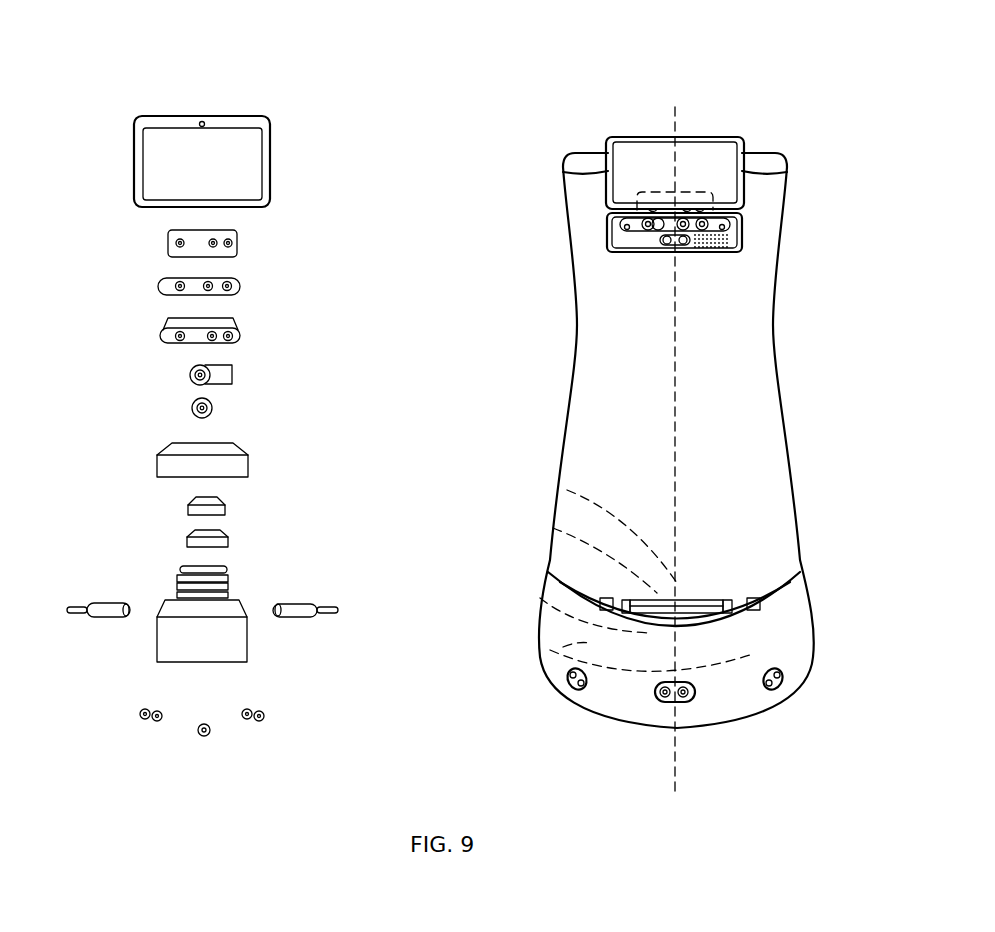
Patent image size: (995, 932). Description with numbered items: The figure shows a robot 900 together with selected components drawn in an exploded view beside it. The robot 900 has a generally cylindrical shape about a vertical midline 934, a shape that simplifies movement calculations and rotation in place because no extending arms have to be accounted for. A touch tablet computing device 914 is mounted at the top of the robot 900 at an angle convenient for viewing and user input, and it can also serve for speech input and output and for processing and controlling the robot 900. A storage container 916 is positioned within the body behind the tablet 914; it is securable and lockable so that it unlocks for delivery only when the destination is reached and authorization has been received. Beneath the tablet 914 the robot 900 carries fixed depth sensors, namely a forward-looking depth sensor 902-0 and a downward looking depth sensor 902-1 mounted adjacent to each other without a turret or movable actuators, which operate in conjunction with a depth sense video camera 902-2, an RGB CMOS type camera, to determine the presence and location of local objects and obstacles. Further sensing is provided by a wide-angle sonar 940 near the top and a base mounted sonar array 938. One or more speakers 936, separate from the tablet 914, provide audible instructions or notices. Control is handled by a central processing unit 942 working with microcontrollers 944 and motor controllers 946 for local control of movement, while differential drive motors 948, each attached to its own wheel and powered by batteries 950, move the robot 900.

The robot 900 is at (652, 63).
The storage container 916 is at (752, 163).
The touch tablet computing device 914 is at (630, 181).
The depth sense video camera 902-2 is at (625, 226).
The forward-looking depth sensor 902-0 is at (627, 226).
The downward looking depth sensor 902-1 is at (655, 236).
The speaker 936 is at (724, 251).
The wide-angle sonar 940 is at (675, 251).
The central processing unit 942 is at (248, 467).
The microcontroller 944 is at (225, 510).
The motor controller 946 is at (228, 542).
The battery 950 is at (248, 668).
The differential drive motor 948 is at (102, 613).
The base mounted sonar array 938 is at (770, 690).
The vertical midline 934 is at (676, 464).